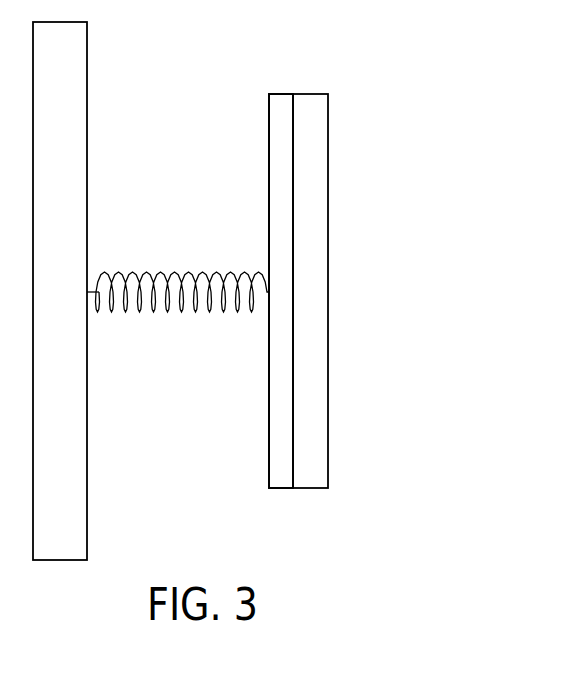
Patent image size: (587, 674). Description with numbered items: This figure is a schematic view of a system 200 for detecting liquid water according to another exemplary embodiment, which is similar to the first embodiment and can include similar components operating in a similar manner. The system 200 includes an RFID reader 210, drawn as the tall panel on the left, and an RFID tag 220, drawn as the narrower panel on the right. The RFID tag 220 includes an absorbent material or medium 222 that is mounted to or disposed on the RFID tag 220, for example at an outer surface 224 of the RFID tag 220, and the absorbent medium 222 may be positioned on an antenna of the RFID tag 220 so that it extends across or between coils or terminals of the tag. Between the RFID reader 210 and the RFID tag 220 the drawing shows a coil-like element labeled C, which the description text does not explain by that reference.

The system for detecting liquid water 200 is at (361, 65).
The RFID reader 210 is at (87, 140).
The RFID tag 220 is at (328, 140).
The absorbent medium 222 is at (269, 142).
The outer surface 224 is at (275, 194).
The coil spring (compliant member) C is at (172, 256).